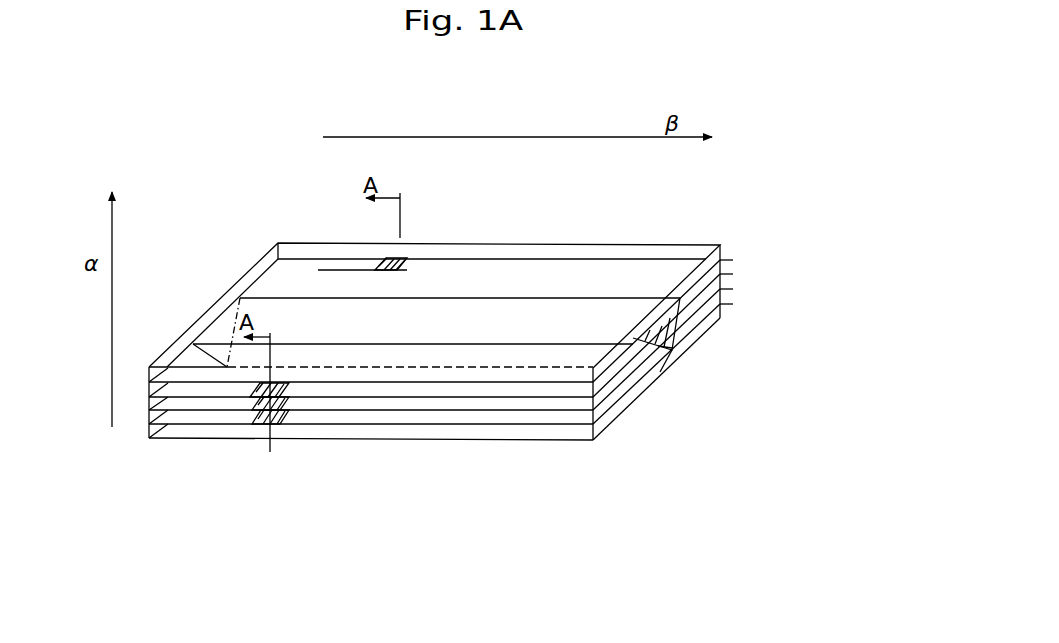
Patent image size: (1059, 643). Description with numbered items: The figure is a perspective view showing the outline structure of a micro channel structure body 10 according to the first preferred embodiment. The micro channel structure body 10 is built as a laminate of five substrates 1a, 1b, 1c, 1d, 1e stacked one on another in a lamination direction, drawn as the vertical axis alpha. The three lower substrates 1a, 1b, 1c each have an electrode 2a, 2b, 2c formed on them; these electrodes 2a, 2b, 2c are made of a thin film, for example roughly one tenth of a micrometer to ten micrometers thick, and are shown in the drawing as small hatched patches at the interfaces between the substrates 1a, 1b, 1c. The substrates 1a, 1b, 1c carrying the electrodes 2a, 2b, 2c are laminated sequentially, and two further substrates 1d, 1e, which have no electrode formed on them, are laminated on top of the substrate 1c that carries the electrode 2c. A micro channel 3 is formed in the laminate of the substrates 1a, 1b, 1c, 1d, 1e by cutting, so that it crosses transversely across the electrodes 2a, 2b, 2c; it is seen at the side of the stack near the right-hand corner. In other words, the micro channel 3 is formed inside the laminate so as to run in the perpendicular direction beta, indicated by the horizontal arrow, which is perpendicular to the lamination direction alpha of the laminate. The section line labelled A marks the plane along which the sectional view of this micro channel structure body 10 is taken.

The micro channel structure body 10 is at (621, 186).
The substrate 1a is at (722, 318).
The substrate 1b is at (722, 300).
The substrate 1c is at (722, 284).
The substrate 1d is at (722, 266).
The substrate 1e is at (720, 250).
The electrode 2a is at (290, 425).
The electrode 2b is at (289, 403).
The electrode 2c is at (290, 387).
The micro channel 3 is at (670, 350).